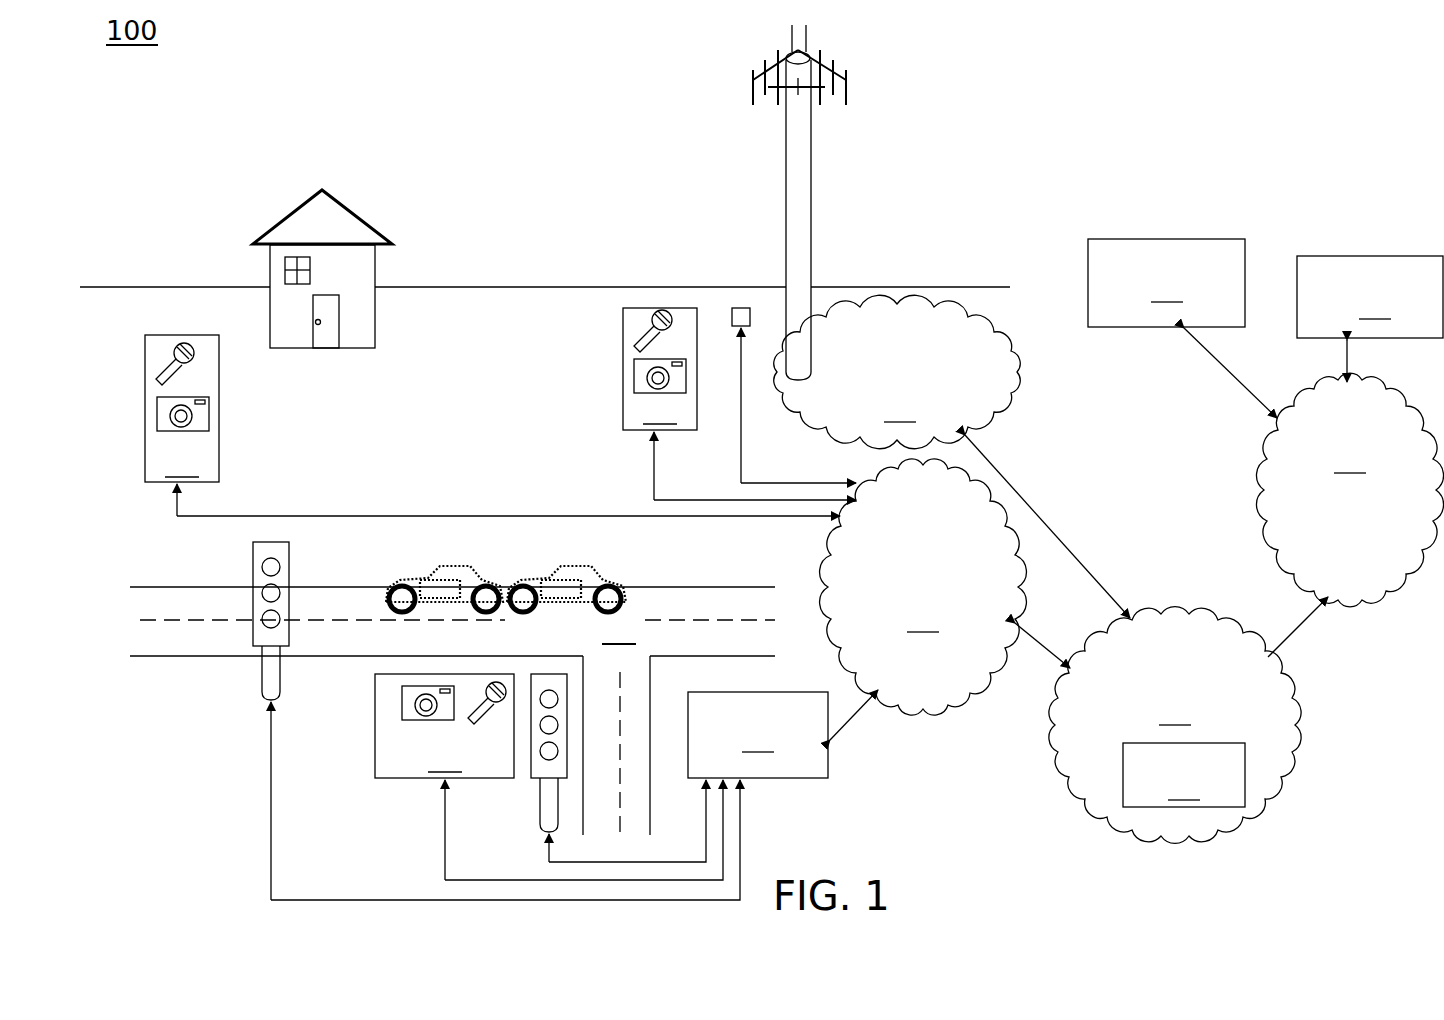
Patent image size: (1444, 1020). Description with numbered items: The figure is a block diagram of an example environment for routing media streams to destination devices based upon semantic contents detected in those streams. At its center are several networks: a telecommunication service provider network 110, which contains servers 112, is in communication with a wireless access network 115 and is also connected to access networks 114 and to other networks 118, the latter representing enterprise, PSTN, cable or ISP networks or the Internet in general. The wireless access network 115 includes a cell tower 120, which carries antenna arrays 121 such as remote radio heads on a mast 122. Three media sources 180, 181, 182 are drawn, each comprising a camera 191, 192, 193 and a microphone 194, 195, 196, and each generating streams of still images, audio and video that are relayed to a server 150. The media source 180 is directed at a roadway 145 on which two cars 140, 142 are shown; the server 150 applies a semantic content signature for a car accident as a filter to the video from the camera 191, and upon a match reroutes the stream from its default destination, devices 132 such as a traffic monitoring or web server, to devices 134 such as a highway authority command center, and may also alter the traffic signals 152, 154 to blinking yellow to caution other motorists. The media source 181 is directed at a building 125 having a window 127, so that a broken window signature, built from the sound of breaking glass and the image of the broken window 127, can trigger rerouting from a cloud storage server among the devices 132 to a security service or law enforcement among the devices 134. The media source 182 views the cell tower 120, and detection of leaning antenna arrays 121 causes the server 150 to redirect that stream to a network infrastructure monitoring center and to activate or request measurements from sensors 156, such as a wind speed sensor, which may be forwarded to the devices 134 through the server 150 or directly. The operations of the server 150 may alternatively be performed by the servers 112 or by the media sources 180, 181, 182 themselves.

The telecommunication service provider network 110 is at (1175, 725).
The servers 112 is at (1184, 775).
The access networks 114 is at (923, 587).
The wireless access network 115 is at (897, 371).
The other networks 118 is at (1349, 490).
The cell tower 120 is at (815, 202).
The antenna arrays 121 is at (850, 91).
The mast 122 is at (811, 203).
The building 125 is at (298, 204).
The window 127 is at (284, 275).
The devices 132 is at (1166, 283).
The devices 134 is at (1370, 297).
The car 140 is at (392, 587).
The car 142 is at (512, 587).
The roadway 145 is at (616, 728).
The server 150 is at (758, 735).
The traffic signal 152 is at (262, 696).
The traffic signal 154 is at (540, 798).
The sensors 156 is at (741, 307).
The media source 180 is at (549, 777).
The media source 181 is at (469, 425).
The media source 182 is at (716, 404).
The camera 191 is at (432, 722).
The camera 192 is at (157, 406).
The camera 193 is at (634, 369).
The microphone 194 is at (485, 716).
The microphone 195 is at (151, 380).
The microphone 196 is at (631, 347).